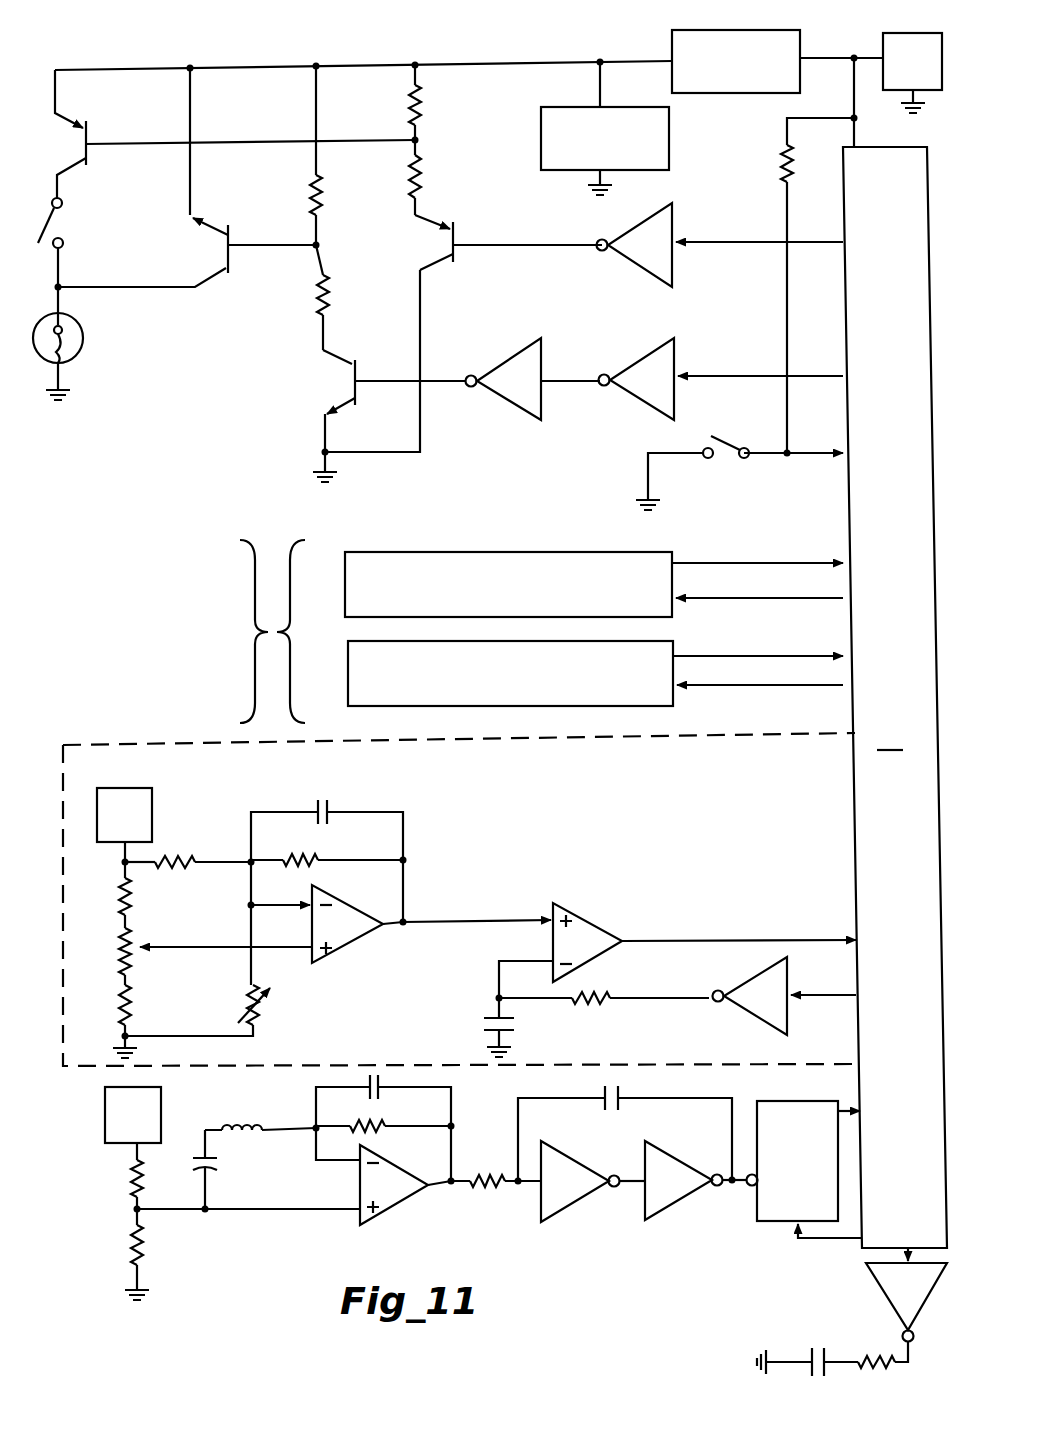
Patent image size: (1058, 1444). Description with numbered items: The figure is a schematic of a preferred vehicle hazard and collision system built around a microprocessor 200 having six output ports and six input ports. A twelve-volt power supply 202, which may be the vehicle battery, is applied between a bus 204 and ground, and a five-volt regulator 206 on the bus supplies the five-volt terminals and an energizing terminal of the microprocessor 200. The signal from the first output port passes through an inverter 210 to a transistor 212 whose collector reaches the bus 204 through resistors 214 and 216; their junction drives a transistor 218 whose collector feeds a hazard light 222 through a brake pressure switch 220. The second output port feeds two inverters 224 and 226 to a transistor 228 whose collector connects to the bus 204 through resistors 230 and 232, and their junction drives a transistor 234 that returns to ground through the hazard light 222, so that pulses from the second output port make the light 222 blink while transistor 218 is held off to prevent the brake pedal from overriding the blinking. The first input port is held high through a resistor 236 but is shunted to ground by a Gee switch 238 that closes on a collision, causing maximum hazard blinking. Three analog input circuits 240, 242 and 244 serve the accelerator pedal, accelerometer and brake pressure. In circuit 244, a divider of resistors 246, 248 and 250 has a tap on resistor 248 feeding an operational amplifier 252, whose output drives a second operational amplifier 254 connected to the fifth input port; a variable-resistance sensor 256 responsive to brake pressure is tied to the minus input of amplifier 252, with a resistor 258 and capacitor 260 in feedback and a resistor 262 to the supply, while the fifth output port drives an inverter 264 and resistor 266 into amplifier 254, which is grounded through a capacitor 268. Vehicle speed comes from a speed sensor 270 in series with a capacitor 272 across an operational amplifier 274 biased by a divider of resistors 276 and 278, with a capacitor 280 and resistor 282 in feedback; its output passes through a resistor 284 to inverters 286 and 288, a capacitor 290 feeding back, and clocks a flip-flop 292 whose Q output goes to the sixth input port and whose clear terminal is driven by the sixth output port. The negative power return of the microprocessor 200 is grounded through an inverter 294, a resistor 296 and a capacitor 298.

The microprocessor 200 is at (843, 536).
The 12-volt power supply 202 is at (541, 150).
The bus 204 is at (455, 64).
The 5-volt regulator 206 is at (708, 30).
The inverter 210 is at (628, 251).
The transistor 212 is at (457, 243).
The resistor 214 is at (422, 188).
The resistor 216 is at (409, 109).
The transistor 218 is at (88, 132).
The brake pressure switch 220 is at (58, 200).
The hazard light 222 is at (72, 356).
The inverter 224 is at (634, 402).
The inverter 226 is at (498, 402).
The transistor 228 is at (358, 370).
The resistor 230 is at (330, 302).
The resistor 232 is at (323, 203).
The transistor 234 is at (230, 245).
The resistor 236 is at (781, 165).
The switch 238 is at (716, 440).
The analog input circuit 240 is at (442, 552).
The analog input circuit 242 is at (348, 662).
The analog input circuit 244 is at (160, 745).
The resistor 246 is at (134, 888).
The resistor 248 is at (138, 944).
The resistor 250 is at (134, 1000).
The operational amplifier 252 is at (362, 938).
The operational amplifier 254 is at (586, 926).
The variable-resistance sensor 256 is at (256, 1028).
The resistor 258 is at (318, 855).
The capacitor 260 is at (354, 805).
The resistor 262 is at (178, 858).
The inverter 264 is at (745, 988).
The resistor 266 is at (608, 997).
The capacitor 268 is at (516, 1034).
The speed sensor 270 is at (216, 1130).
The capacitor 272 is at (200, 1164).
The operational amplifier 274 is at (358, 1184).
The resistor 276 is at (131, 1182).
The resistor 278 is at (143, 1244).
The capacitor 280 is at (380, 1092).
The resistor 282 is at (384, 1132).
The resistor 284 is at (484, 1190).
The inverter 286 is at (574, 1214).
The inverter 288 is at (677, 1212).
The capacitor 290 is at (600, 1094).
The flip-flop 292 is at (762, 1228).
The inverter 294 is at (874, 1284).
The resistor 296 is at (880, 1356).
The capacitor 298 is at (808, 1352).